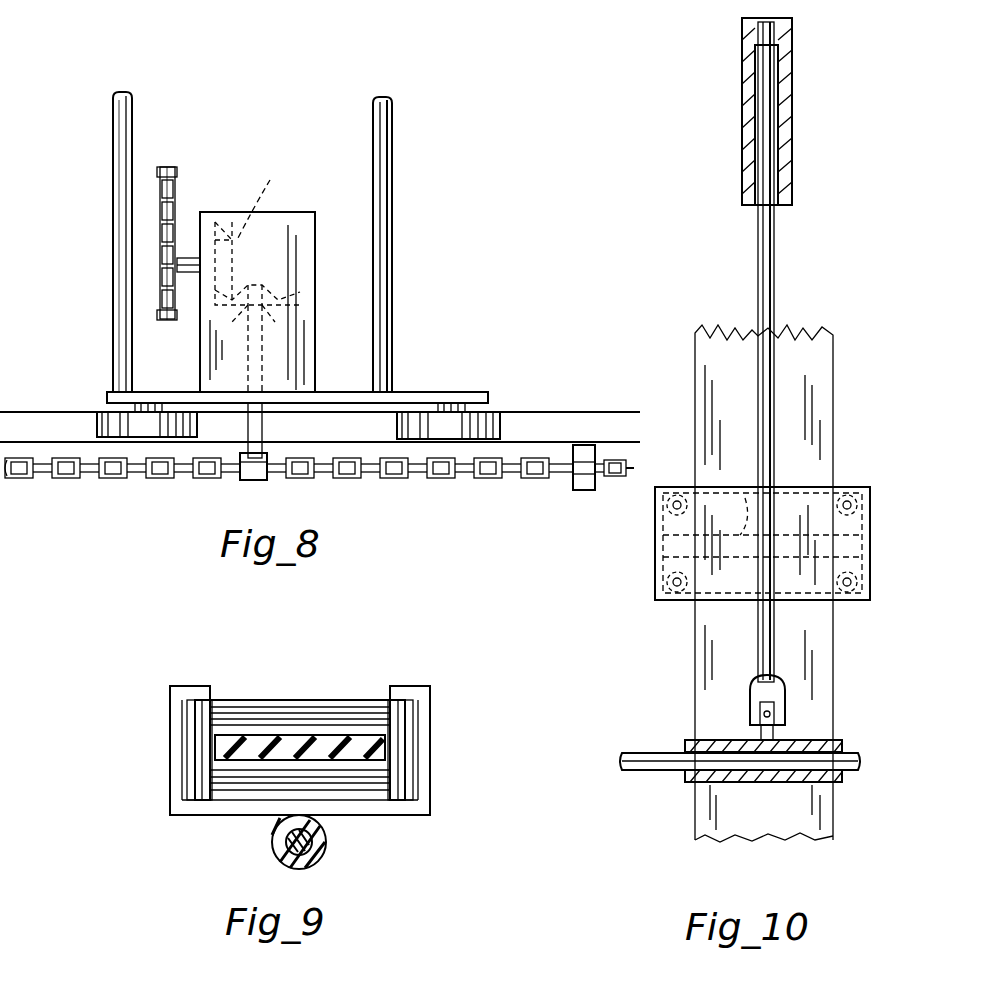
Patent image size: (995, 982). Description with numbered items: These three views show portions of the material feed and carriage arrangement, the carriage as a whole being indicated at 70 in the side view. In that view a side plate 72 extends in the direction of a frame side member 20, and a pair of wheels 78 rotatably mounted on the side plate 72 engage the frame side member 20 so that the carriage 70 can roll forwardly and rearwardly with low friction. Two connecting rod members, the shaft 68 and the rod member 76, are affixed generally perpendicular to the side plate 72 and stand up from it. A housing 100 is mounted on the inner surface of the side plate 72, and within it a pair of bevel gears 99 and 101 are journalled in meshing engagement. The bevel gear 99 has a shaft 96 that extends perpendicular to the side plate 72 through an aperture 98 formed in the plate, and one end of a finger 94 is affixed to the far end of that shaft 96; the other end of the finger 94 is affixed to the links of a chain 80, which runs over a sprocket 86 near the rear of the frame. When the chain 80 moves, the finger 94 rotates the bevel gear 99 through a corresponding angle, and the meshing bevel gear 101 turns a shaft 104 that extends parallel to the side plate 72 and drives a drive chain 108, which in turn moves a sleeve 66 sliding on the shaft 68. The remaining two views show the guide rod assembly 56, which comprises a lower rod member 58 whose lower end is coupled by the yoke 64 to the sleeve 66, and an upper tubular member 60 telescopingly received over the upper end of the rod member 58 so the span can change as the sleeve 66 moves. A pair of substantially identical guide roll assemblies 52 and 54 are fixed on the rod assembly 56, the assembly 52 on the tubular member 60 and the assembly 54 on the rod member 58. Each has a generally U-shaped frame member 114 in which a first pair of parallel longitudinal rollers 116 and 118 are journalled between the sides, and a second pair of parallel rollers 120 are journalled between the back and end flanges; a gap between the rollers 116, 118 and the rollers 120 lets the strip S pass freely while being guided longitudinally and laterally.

In FIG. 8, the frame side member 20 is at (592, 412).
In FIG. 9, the guide roll assembly 52 is at (434, 800).
In FIG. 10, the guide roll assembly 54 is at (685, 600).
In FIG. 9, the guide rod assembly 56 is at (268, 838).
In FIG. 10, the guide rod assembly 56 is at (741, 144).
In FIG. 9, the lower rod member 58 is at (290, 846).
In FIG. 10, the lower rod member 58 is at (757, 287).
In FIG. 9, the upper tubular member 60 is at (322, 858).
In FIG. 10, the upper tubular member 60 is at (793, 138).
In FIG. 10, the yoke 64 is at (748, 694).
In FIG. 10, the sleeve 66 is at (772, 783).
In FIG. 8, the shaft 68 is at (112, 182).
In FIG. 10, the shaft 68 is at (660, 775).
In FIG. 8, the carriage assembly 70 is at (398, 393).
In FIG. 8, the side plate 72 is at (358, 392).
In FIG. 8, the rod member 76 is at (393, 205).
In FIG. 8, the wheel 78 is at (110, 410).
In FIG. 8, the chain 80 is at (160, 480).
In FIG. 8, the sprocket 86 is at (560, 472).
In FIG. 8, the finger 94 is at (268, 452).
In FIG. 8, the shaft 96 is at (322, 370).
In FIG. 8, the aperture 98 is at (250, 412).
In FIG. 8, the bevel gear 99 is at (257, 272).
In FIG. 8, the housing 100 is at (273, 250).
In FIG. 8, the bevel gear 101 is at (274, 199).
In FIG. 8, the shaft 104 is at (192, 255).
In FIG. 8, the drive chain 108 is at (178, 178).
In FIG. 9, the frame member 114 is at (175, 812).
In FIG. 10, the frame member 114 is at (832, 488).
In FIG. 9, the longitudinal roller 116 is at (358, 712).
In FIG. 9, the longitudinal roller 118 is at (367, 790).
In FIG. 10, the longitudinal roller 118 is at (736, 510).
In FIG. 9, the roller 120 is at (193, 745).
In FIG. 10, the roller 120 is at (668, 515).
In FIG. 9, the strip S is at (300, 740).